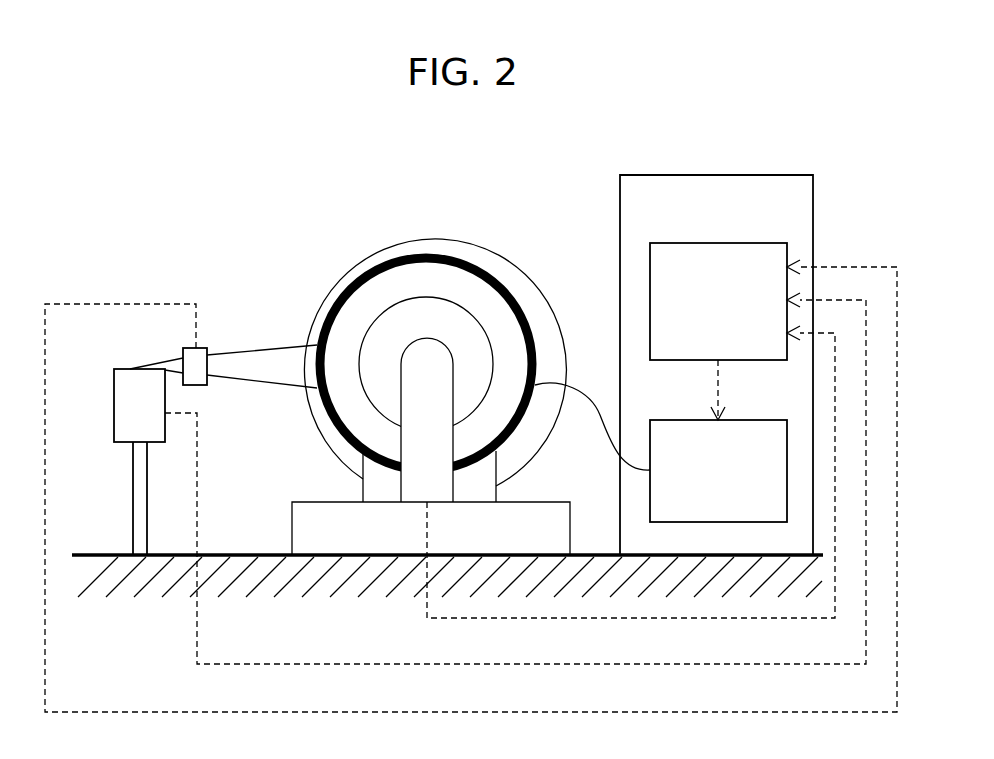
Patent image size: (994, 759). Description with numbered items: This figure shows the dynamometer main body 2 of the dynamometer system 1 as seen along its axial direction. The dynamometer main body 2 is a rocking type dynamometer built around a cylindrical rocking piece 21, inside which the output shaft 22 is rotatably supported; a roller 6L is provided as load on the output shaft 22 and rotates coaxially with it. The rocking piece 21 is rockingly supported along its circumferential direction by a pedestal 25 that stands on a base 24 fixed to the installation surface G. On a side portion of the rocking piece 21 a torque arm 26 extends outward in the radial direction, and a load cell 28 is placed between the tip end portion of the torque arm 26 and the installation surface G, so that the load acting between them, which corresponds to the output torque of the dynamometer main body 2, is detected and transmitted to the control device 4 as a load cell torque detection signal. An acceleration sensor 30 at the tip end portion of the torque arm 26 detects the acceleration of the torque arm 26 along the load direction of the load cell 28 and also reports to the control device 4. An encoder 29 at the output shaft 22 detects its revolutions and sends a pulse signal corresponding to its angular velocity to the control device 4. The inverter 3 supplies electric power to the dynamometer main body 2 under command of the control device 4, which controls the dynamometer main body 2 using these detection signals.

The dynamometer system 1 is at (308, 137).
The dynamometer main body 2 is at (259, 236).
The inverter 3 is at (773, 419).
The control device 4 is at (771, 242).
The roller 6L is at (452, 232).
The rocking piece 21 is at (487, 268).
The output shaft 22 is at (397, 312).
The base 24 is at (533, 501).
The pedestal 25 is at (362, 484).
The torque arm 26 is at (253, 352).
The load cell 28 is at (125, 408).
The encoder 29 is at (432, 362).
The acceleration sensor 30 is at (200, 348).
The installation surface G is at (235, 554).